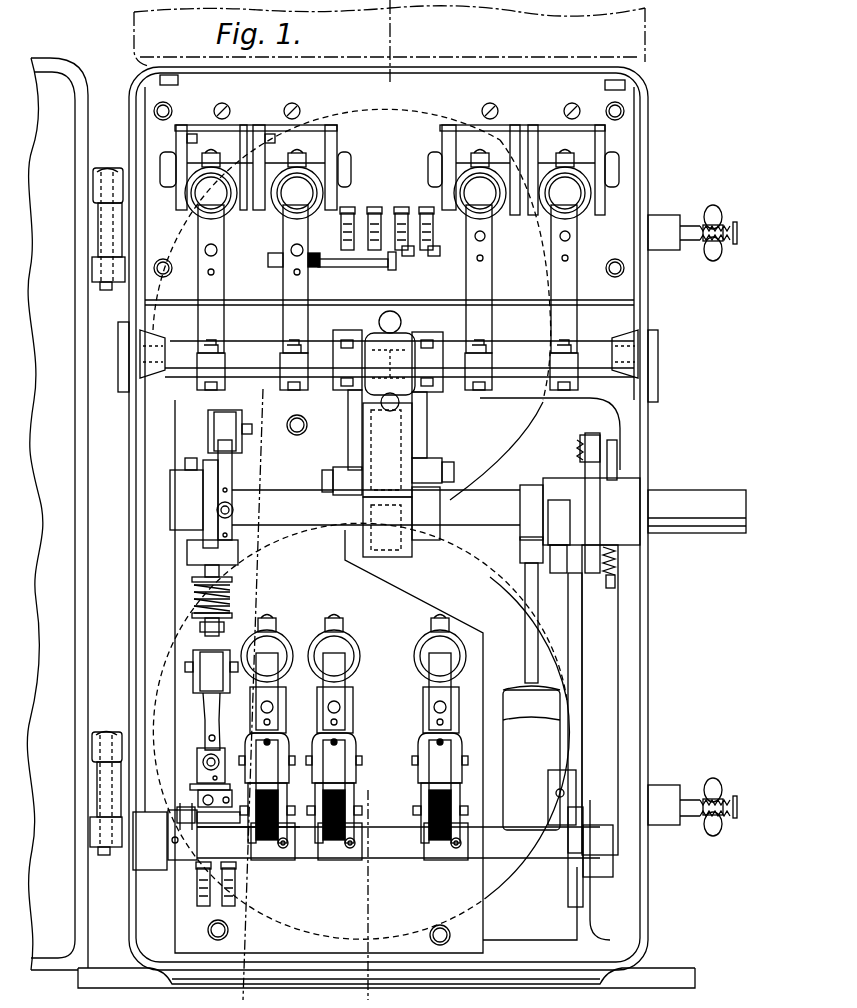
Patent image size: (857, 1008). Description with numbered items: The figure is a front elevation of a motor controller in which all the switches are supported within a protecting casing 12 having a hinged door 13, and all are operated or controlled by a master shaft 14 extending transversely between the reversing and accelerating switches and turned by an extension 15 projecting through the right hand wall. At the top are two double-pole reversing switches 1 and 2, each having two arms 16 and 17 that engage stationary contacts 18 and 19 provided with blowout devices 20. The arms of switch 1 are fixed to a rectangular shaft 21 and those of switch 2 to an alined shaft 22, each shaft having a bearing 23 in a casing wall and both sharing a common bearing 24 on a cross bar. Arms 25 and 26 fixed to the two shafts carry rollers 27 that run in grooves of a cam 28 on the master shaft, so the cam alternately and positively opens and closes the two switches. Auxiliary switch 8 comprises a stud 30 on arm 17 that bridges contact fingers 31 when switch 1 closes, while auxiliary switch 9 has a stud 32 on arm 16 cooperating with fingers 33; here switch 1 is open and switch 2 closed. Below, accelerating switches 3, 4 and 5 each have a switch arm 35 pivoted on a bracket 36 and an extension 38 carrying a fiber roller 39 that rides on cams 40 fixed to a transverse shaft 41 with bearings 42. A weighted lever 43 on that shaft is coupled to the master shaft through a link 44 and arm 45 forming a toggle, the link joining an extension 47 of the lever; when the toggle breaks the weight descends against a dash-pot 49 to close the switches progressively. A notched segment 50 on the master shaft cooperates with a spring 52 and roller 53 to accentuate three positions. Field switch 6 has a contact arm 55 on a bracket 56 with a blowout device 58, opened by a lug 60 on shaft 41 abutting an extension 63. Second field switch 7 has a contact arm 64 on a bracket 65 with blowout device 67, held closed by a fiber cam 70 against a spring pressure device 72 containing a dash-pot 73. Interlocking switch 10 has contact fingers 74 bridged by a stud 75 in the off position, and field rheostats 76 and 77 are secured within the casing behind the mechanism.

The double-pole reversing switch 1 is at (283, 242).
The double-pole reversing switch 2 is at (550, 284).
The accelerating switch 3 is at (354, 1001).
The accelerating switch 4 is at (263, 389).
The accelerating switch 5 is at (283, 700).
The shunt field weakening switch 6 is at (216, 720).
The second field switch 7 is at (232, 476).
The auxiliary switch 8 is at (343, 216).
The auxiliary switch 9 is at (397, 216).
The auxiliary switch 10 is at (199, 881).
The protecting casing 12 is at (643, 915).
The hinged door 13 is at (52, 968).
The master shaft 14 is at (482, 498).
The extension 15 is at (731, 533).
The switch arm 16 is at (222, 290).
The switch arm 17 is at (305, 292).
The stationary contact 18 is at (208, 168).
The stationary contact 19 is at (302, 178).
The blowout device 20 is at (312, 140).
The rectangular shaft 21 is at (266, 330).
The shaft 22 is at (505, 352).
The bearing 23 is at (150, 386).
The common bearing 24 is at (402, 338).
The arm 25 is at (352, 432).
The arm 26 is at (425, 432).
The roller 27 is at (352, 500).
The cam 28 is at (395, 550).
The stud 30 is at (370, 267).
The contact fingers 31 is at (340, 256).
The stud 32 is at (434, 252).
The contact fingers 33 is at (410, 252).
The switch arm 35 is at (423, 710).
The bracket 36 is at (420, 745).
The extension 38 is at (428, 797).
The fiber roller 39 is at (455, 797).
The cam 40 is at (436, 862).
The transverse shaft 41 is at (408, 858).
The bearing 42 is at (153, 862).
The weighted lever 43 is at (583, 750).
The link 44 is at (578, 672).
The arm 45 is at (563, 560).
The extension 47 is at (552, 808).
The dash-pot 49 is at (510, 682).
The notched segment 50 is at (590, 471).
The tensioning spring 52 is at (580, 440).
The roller 53 is at (588, 436).
The contact arm 55 is at (208, 734).
The bracket 56 is at (202, 760).
The blowout device 58 is at (212, 655).
The lug 60 is at (183, 806).
The extension 63 is at (232, 798).
The contact arm 64 is at (233, 503).
The bracket 65 is at (241, 538).
The blowout device 67 is at (214, 424).
The fiber cam 70 is at (206, 462).
The spring pressure device 72 is at (228, 590).
The dash-pot 73 is at (222, 605).
The contact fingers 74 is at (248, 877).
The bridging member 75 is at (228, 823).
The field rheostat 76 is at (515, 432).
The field rheostat 77 is at (522, 585).